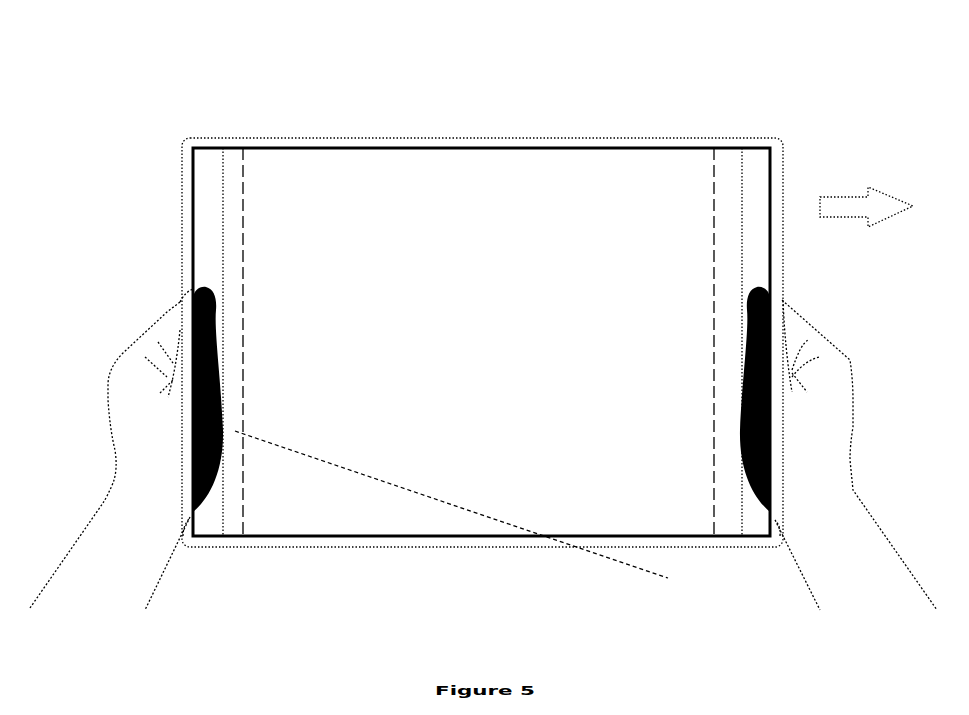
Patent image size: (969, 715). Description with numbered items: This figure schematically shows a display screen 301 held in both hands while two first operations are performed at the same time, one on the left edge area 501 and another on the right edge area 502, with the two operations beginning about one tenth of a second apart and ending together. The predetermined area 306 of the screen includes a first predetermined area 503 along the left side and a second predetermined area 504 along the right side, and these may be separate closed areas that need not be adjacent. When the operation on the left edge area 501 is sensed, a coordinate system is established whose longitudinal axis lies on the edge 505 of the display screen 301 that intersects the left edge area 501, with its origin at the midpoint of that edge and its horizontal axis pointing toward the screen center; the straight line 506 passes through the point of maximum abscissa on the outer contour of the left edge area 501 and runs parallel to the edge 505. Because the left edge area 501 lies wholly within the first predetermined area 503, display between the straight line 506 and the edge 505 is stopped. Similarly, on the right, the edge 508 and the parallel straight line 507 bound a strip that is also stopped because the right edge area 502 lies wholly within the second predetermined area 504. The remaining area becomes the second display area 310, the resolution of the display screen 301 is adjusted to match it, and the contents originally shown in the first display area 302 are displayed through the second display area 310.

The display screen 301 is at (884, 207).
The first display area 302 is at (763, 518).
The predetermined area 306 is at (752, 192).
The second display area 310 is at (730, 482).
The left edge area 501 is at (190, 293).
The right edge area 502 is at (770, 288).
The first predetermined area 503 is at (233, 182).
The second predetermined area 504 is at (755, 186).
The edge 505 is at (193, 217).
The straight line 506 is at (210, 193).
The straight line 507 is at (742, 232).
The edge 508 is at (771, 249).